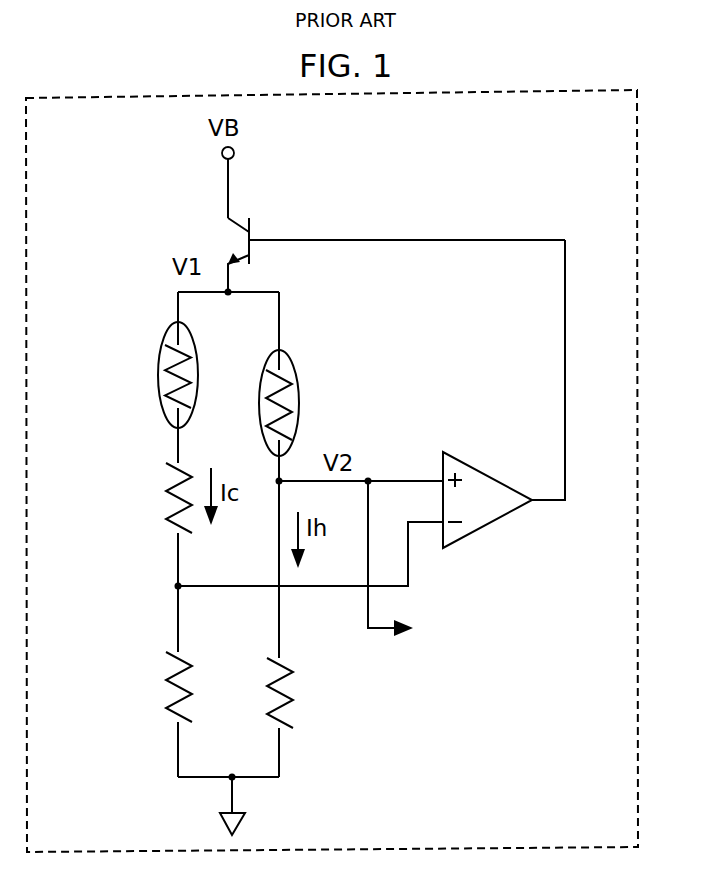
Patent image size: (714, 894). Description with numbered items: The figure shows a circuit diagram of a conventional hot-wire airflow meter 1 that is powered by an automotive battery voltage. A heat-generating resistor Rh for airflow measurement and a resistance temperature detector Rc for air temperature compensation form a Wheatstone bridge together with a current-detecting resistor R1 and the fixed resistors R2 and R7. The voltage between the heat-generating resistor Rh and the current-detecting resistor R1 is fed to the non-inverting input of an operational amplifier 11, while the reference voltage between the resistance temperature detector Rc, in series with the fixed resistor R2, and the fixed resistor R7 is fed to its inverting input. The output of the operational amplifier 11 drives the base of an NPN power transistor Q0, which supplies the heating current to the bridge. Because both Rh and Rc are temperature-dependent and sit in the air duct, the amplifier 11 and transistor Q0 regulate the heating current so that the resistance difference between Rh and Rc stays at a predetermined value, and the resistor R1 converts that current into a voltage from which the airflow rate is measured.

The airflow meter 1 is at (637, 220).
The power transistor Q0 is at (254, 225).
The resistance temperature detector Rc is at (155, 380).
The heat-generating resistor Rh is at (302, 386).
The fixed resistor R2 is at (163, 510).
The fixed resistor R7 is at (163, 668).
The current-detecting resistor R1 is at (296, 690).
The operational amplifier 11 is at (492, 520).